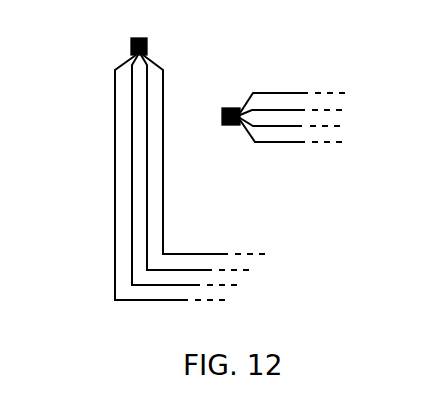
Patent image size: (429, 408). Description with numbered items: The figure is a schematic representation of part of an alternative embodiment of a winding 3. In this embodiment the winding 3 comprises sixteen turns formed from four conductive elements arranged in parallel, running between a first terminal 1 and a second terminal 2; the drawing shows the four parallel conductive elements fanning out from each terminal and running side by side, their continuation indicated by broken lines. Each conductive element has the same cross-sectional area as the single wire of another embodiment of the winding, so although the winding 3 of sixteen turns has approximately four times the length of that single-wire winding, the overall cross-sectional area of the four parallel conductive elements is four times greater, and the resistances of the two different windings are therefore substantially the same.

The first terminal 1 is at (130, 40).
The second terminal 2 is at (228, 108).
The winding 3 is at (168, 192).